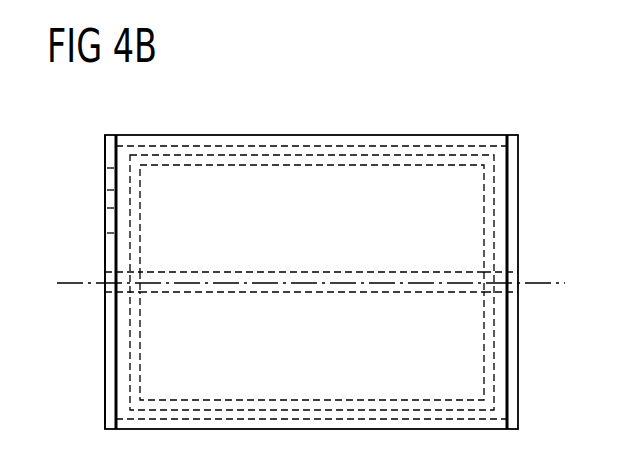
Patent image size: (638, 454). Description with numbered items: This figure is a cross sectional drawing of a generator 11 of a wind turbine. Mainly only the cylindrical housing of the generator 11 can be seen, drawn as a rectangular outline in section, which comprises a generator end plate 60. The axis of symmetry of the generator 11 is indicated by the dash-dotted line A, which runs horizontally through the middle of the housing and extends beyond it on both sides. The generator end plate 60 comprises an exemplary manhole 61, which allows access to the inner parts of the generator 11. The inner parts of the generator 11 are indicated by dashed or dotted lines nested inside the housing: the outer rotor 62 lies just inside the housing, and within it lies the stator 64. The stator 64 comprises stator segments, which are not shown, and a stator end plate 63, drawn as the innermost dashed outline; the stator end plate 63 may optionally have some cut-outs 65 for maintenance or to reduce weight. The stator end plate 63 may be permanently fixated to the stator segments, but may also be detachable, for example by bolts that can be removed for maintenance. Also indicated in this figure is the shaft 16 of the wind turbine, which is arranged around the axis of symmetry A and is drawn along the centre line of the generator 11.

The generator 11 is at (466, 93).
The generator end plate 60 is at (110, 168).
The manhole 61 is at (110, 210).
The outer rotor 62 is at (294, 155).
The stator 64 is at (357, 166).
The cut-outs 65 is at (141, 210).
The stator end plate 63 is at (141, 348).
The shaft 16 is at (305, 283).
The axis of symmetry A is at (549, 282).